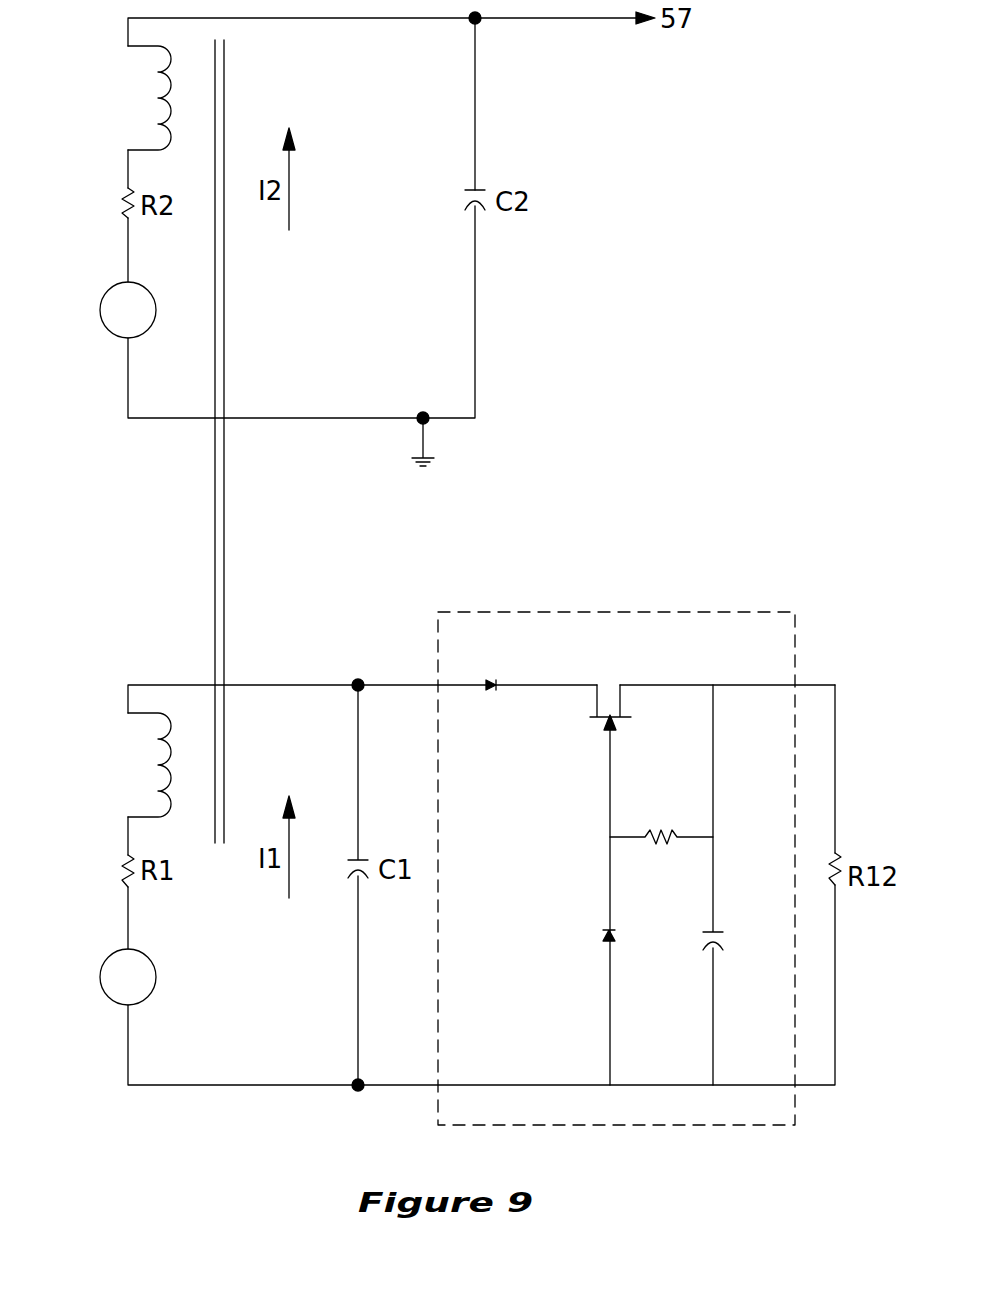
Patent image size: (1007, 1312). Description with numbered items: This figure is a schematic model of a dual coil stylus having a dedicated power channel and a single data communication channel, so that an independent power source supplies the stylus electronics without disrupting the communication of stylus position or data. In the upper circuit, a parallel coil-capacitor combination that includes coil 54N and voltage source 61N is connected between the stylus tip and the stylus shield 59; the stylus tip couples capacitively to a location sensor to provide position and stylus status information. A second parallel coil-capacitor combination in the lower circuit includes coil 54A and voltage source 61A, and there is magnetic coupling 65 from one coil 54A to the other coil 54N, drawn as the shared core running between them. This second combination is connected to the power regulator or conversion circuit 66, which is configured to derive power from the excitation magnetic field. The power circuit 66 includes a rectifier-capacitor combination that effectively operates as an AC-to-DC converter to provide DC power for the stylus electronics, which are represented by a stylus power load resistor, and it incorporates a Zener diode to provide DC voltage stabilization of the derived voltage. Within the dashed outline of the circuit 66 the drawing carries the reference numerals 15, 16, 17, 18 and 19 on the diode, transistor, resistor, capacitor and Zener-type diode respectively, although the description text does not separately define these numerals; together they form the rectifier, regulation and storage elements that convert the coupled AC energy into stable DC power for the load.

The coil 54N is at (160, 114).
The voltage source 61N is at (100, 312).
The magnetic coupling 65 is at (215, 545).
The stylus shield 59 is at (425, 457).
The coil 54A is at (160, 781).
The voltage source 61A is at (100, 979).
The power regulator or conversion circuit 66 is at (665, 612).
The diode D11 15 is at (491, 690).
The transistor Q 16 is at (592, 720).
The resistor R12 17 is at (651, 840).
The capacitor C12 18 is at (711, 928).
The diode D12 19 is at (600, 936).